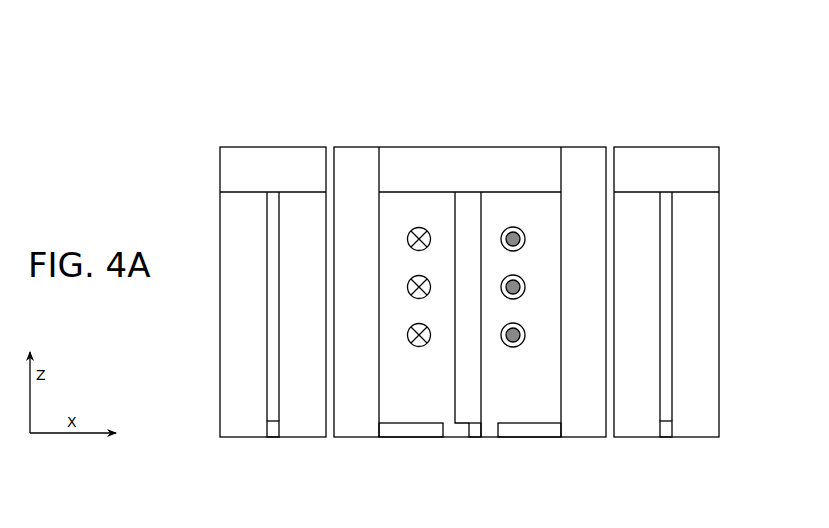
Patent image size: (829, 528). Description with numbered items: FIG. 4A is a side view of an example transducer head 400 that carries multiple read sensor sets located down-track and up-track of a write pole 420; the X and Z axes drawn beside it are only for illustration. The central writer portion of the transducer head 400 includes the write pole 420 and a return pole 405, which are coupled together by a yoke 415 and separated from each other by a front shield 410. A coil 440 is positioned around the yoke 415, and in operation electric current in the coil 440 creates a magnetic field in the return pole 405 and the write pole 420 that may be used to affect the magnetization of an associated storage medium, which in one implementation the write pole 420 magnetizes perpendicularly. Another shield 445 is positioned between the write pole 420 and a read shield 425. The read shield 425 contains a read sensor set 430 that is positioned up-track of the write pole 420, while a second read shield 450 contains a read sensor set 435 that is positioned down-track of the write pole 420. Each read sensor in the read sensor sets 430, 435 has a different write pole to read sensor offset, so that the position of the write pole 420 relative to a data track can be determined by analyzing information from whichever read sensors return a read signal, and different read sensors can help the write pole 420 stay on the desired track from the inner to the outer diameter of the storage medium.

The transducer head 400 is at (700, 57).
The return pole 405 is at (353, 437).
The front shield 410 is at (415, 437).
The yoke 415 is at (460, 437).
The write pole 420 is at (474, 437).
The read shield 425 is at (726, 390).
The read sensor set 430 is at (667, 437).
The read sensor set 435 is at (272, 437).
The coil 440 is at (507, 208).
The shield 445 is at (535, 437).
The read shield 450 is at (210, 390).